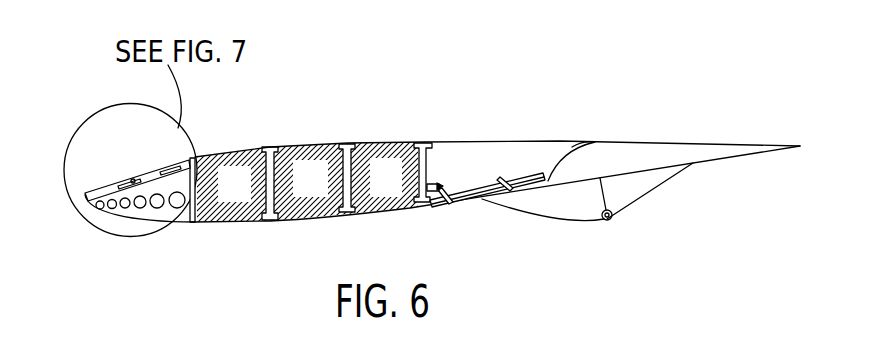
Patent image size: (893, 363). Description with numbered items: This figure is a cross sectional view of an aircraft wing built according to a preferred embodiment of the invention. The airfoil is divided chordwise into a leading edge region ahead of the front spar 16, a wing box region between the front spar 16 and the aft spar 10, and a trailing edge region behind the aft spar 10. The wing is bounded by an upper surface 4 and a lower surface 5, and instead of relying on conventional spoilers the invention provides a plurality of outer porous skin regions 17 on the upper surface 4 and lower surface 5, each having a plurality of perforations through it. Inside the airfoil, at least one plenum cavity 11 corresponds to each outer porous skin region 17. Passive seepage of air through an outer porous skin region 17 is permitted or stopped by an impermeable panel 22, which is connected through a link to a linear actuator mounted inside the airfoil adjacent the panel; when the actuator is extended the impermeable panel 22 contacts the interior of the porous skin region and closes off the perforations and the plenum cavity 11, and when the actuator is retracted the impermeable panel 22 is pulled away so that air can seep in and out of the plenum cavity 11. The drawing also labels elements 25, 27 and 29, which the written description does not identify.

The upper surface 4 is at (485, 140).
The lower surface 5 is at (306, 225).
The aft spar 10 is at (425, 142).
The plenum cavity 11 is at (92, 208).
The front spar 16 is at (199, 223).
The outer porous skin region 17 is at (126, 172).
The impermeable panel 22 is at (465, 197).
The rib spar 25 is at (271, 141).
The pockets 27 is at (224, 182).
The flap 29 is at (619, 150).